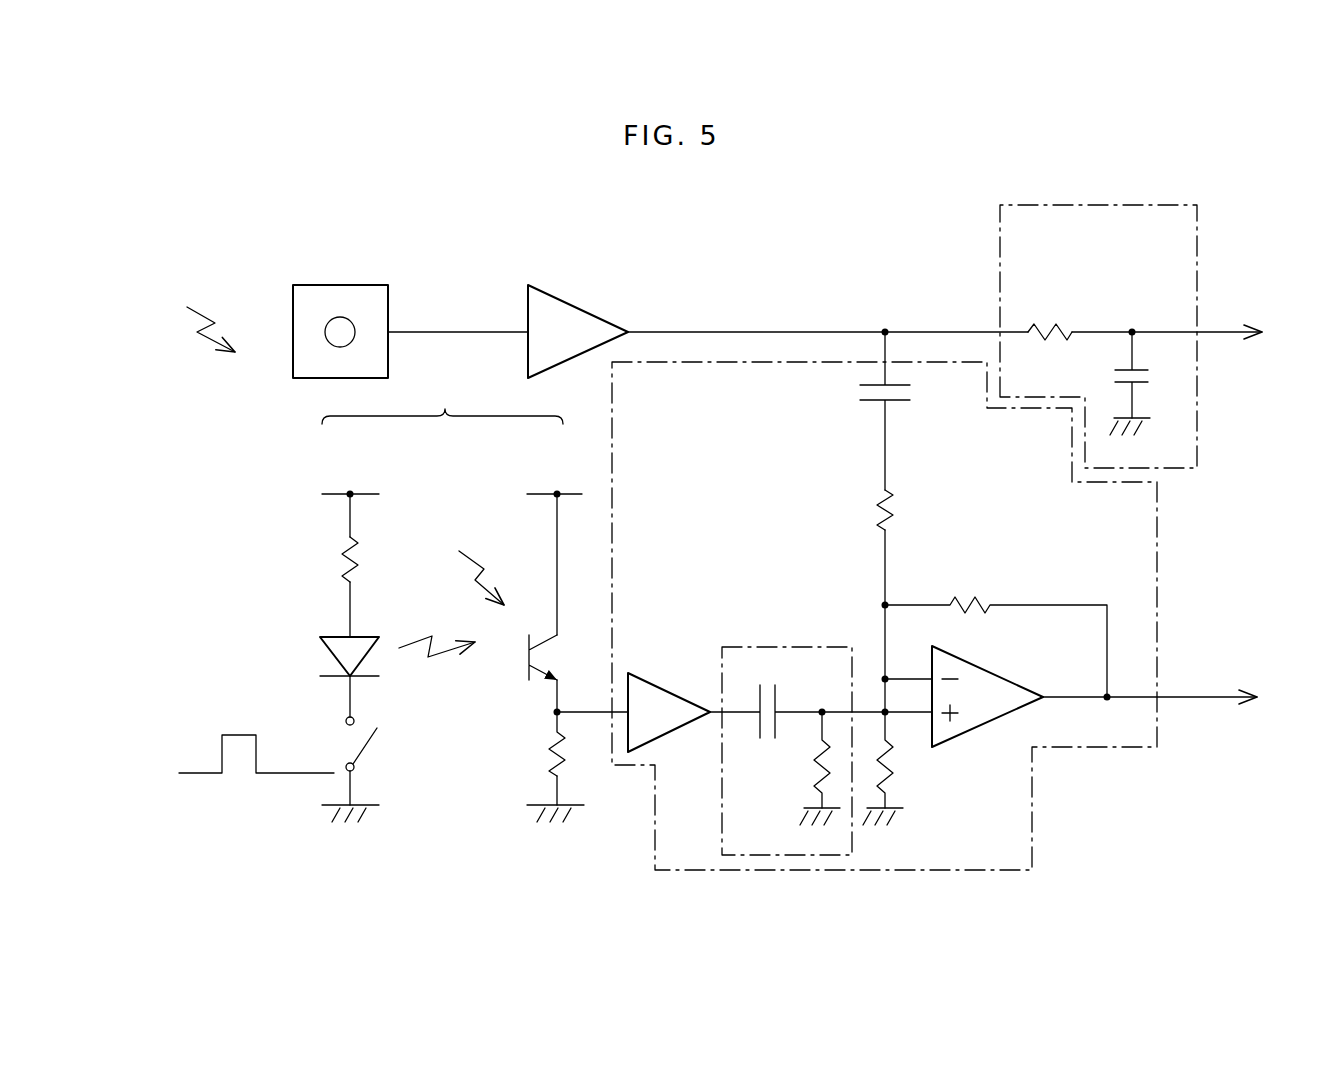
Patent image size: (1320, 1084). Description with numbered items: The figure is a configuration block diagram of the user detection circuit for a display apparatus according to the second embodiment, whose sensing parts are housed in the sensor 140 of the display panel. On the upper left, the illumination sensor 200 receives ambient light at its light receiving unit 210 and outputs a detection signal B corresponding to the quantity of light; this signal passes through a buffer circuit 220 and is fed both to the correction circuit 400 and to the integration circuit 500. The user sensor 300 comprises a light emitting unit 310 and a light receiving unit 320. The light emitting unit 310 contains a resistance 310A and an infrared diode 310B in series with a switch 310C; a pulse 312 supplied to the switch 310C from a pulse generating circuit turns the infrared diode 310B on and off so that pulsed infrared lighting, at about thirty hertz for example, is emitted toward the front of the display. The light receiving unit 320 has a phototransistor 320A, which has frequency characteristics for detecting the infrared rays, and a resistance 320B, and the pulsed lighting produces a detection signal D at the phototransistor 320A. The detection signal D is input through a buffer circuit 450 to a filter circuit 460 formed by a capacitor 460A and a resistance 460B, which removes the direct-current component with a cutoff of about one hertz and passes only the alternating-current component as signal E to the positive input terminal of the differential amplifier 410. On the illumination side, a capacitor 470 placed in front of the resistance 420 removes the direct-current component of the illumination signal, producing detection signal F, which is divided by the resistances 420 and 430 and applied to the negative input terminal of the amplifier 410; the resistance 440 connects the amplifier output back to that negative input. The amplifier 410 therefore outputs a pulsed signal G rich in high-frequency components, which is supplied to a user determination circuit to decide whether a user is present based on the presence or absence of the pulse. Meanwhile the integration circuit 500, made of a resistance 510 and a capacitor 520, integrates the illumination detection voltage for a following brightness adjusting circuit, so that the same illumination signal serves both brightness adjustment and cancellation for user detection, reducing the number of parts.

The sensor 140 is at (285, 216).
The illumination sensor 200 is at (345, 284).
The light receiving unit 210 is at (342, 330).
The buffer circuit 220 is at (598, 318).
The user sensor 300 is at (442, 400).
The light emitting unit 310 is at (352, 490).
The resistance 310A is at (348, 561).
The infrared diode 310B is at (325, 640).
The switch 310C is at (348, 746).
The pulse 312 is at (256, 748).
The light receiving unit 320 is at (552, 490).
The phototransistor 320A is at (529, 655).
The resistance 320B is at (553, 754).
The correction circuit 400 is at (1160, 583).
The differential amplifier 410 is at (1003, 677).
The resistance 420 is at (880, 493).
The resistance 430 is at (889, 775).
The resistance 440 is at (952, 600).
The buffer circuit 450 is at (668, 690).
The filter circuit 460 is at (800, 858).
The capacitor 460A is at (768, 680).
The resistance 460B is at (810, 757).
The capacitor 470 is at (860, 402).
The integration circuit 500 is at (1098, 198).
The resistance 510 is at (1072, 325).
The capacitor 520 is at (1113, 377).
The detection signal B is at (473, 330).
The detection signal D is at (587, 708).
The signal E is at (870, 705).
The detection signal F is at (885, 432).
The pulsed signal G is at (1198, 697).